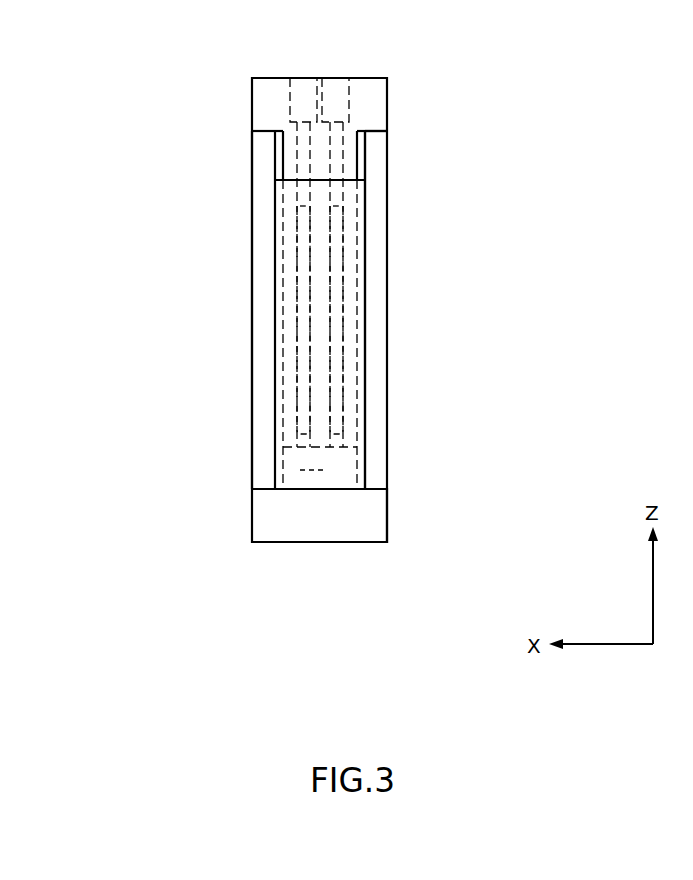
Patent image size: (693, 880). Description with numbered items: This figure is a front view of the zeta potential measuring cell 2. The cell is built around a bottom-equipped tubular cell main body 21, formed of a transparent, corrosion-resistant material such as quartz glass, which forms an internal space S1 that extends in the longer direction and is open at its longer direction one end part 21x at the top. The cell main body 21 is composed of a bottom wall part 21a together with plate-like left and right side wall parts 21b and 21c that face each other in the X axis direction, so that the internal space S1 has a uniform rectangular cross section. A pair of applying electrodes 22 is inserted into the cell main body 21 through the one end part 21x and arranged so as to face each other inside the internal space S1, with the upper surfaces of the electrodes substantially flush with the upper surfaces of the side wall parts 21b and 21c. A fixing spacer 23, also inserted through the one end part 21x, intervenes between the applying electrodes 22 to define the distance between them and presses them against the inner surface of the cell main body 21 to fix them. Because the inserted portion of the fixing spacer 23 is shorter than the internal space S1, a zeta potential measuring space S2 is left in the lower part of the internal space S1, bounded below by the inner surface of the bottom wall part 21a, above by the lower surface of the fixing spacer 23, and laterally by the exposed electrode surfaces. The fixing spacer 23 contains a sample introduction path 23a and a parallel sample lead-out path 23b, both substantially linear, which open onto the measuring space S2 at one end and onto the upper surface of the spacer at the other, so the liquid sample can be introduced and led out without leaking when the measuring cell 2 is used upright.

The measuring cell 2 is at (162, 61).
The cell main body 21 is at (387, 253).
The longer direction one end part 21x is at (402, 129).
The bottom wall part 21a is at (348, 542).
The left side wall part 21b is at (252, 337).
The right side wall part 21c is at (290, 180).
The applying electrodes 22 is at (283, 143).
The fixing spacer 23 is at (270, 78).
The sample introduction path 23a is at (300, 405).
The sample lead-out path 23b is at (340, 405).
The internal space S1 is at (322, 274).
The zeta potential measuring space S2 is at (318, 468).